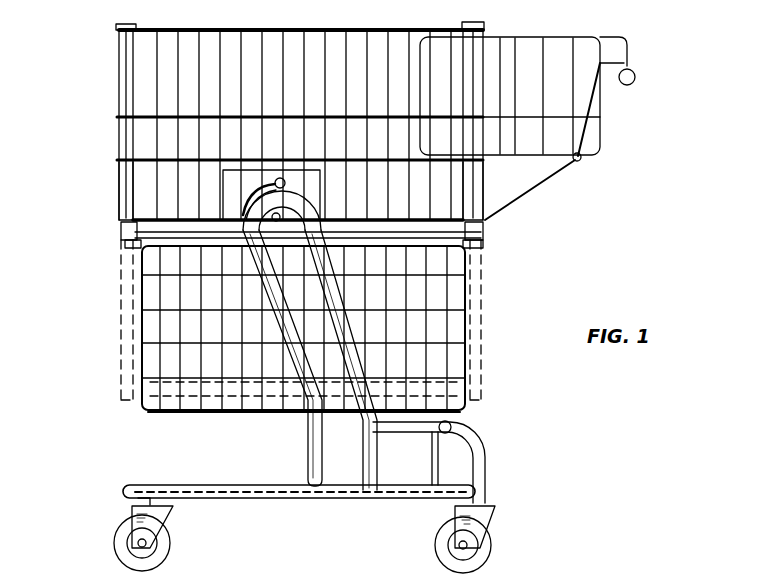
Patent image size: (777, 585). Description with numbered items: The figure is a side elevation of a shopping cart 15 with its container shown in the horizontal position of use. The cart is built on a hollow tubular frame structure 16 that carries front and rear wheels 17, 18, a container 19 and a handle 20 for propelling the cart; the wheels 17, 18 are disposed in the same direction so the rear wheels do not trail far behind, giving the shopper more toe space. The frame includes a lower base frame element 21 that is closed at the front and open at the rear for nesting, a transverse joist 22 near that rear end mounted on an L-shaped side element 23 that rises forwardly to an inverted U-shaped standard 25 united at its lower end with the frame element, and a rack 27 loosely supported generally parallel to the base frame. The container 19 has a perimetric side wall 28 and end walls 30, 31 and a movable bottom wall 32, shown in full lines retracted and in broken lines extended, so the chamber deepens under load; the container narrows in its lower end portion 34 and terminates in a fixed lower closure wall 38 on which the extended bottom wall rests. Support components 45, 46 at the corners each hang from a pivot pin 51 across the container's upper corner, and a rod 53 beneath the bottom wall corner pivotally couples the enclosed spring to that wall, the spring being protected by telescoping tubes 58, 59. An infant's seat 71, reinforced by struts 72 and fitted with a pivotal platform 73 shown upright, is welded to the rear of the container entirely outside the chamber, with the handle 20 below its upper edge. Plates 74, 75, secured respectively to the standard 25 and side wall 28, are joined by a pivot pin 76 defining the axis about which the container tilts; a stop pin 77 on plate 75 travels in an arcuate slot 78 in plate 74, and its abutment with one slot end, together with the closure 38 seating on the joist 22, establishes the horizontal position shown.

The shopping cart 15 is at (118, 91).
The frame structure 16 is at (122, 488).
The front wheels 17 is at (170, 545).
The rear wheels 18 is at (438, 538).
The container 19 is at (116, 161).
The handle 20 is at (636, 77).
The base frame element 21 is at (266, 500).
The joist 22 is at (452, 427).
The L-shaped side element 23 is at (484, 475).
The standard 25 is at (308, 442).
The rack 27 is at (432, 462).
The side wall 28 is at (268, 29).
The end wall 30 is at (116, 118).
The end wall 31 is at (485, 30).
The bottom wall 32 is at (185, 244).
The lower end portion of side wall 34 is at (140, 331).
The fixed lower closure wall 38 is at (245, 413).
The support component 45 is at (122, 48).
The support component 46 is at (458, 26).
The pivot pin 51 is at (140, 30).
The rod 53 is at (130, 247).
The tube 58 is at (124, 188).
The tube 59 is at (121, 232).
The infant's seat 71 is at (592, 37).
The struts 72 is at (555, 177).
The pivotal platform 73 is at (583, 138).
The plate 74 is at (232, 184).
The plate 75 is at (250, 200).
The pivot pin 76 is at (277, 222).
The stop pin 77 is at (281, 178).
The arcuate slot 78 is at (257, 190).